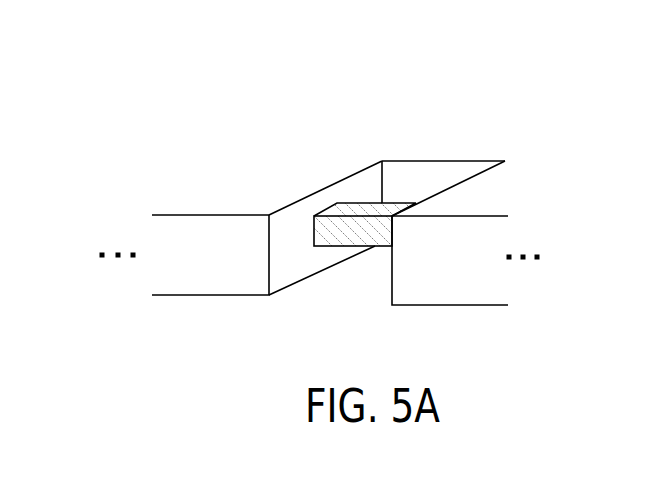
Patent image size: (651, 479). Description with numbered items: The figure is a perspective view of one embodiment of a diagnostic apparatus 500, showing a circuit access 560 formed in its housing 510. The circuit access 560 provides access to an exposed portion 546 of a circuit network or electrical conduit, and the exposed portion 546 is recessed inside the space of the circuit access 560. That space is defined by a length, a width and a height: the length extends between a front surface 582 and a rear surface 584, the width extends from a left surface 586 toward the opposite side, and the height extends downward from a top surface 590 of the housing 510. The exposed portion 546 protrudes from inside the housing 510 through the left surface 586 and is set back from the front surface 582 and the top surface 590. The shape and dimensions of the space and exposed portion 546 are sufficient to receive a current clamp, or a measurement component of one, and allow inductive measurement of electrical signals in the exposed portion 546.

The diagnostic apparatus 500 is at (105, 62).
The housing 510 is at (200, 266).
The exposed portion 546 is at (362, 233).
The circuit access 560 is at (414, 193).
The front surface 582 is at (438, 272).
The rear surface 584 is at (415, 182).
The left surface 586 is at (287, 222).
The top surface 590 is at (516, 187).